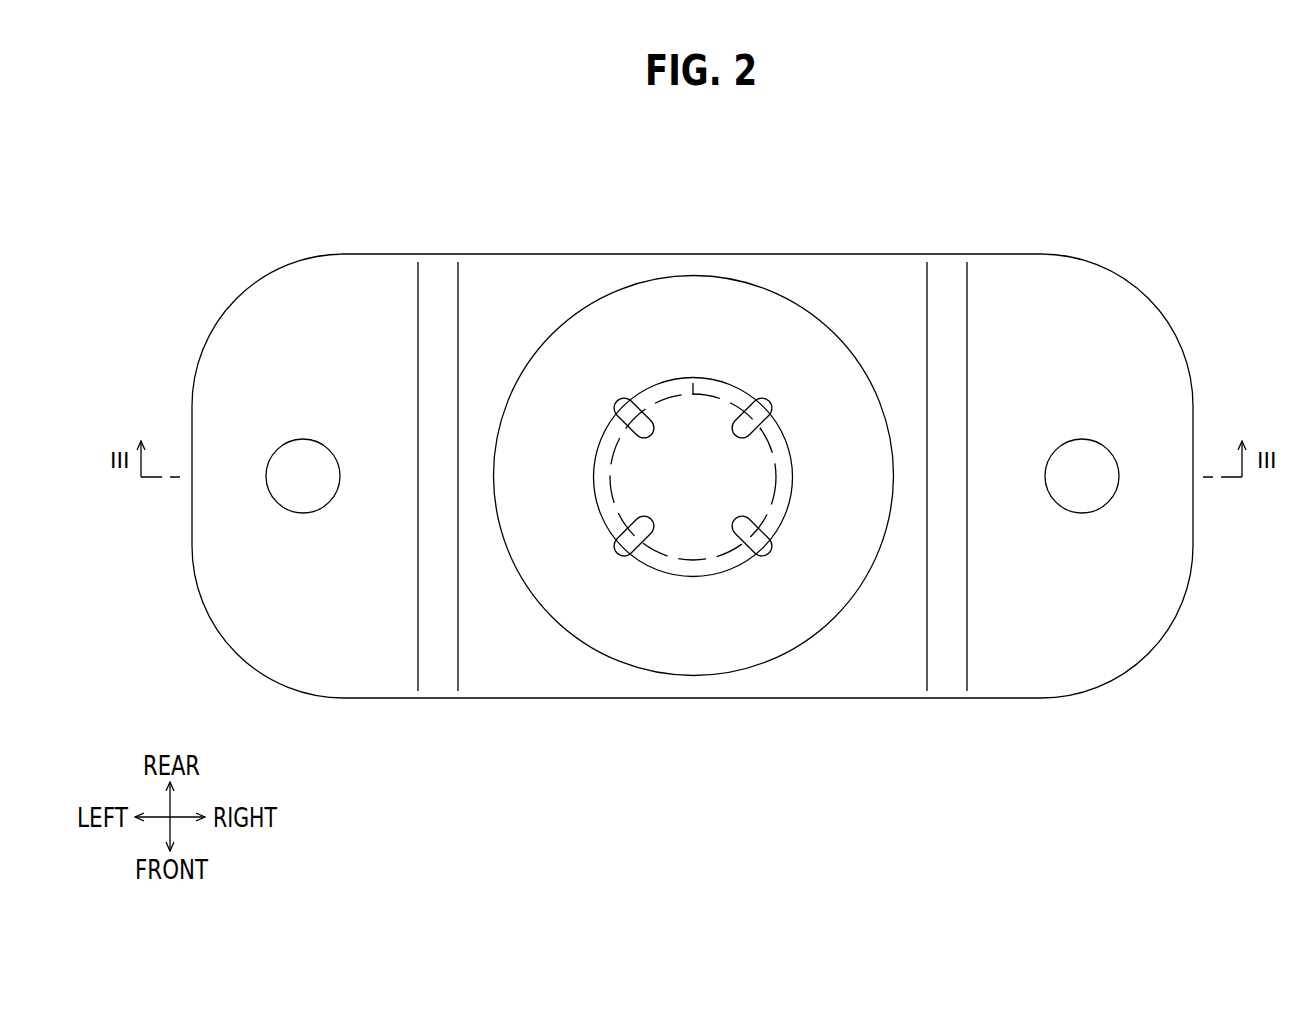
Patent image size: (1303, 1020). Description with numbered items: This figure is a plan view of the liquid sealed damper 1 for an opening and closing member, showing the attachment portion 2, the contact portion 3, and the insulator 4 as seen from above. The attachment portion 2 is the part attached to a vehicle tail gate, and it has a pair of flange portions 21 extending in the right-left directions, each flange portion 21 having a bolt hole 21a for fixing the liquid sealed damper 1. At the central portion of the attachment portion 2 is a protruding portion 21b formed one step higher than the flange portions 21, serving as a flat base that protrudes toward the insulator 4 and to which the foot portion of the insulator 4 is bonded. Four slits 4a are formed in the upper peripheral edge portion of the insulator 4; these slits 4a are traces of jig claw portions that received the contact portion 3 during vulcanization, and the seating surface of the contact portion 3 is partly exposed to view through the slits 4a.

The liquid sealed damper 1 is at (650, 213).
The attachment portion 2 is at (1135, 281).
The flange portion 21 is at (333, 285).
The bolt hole 21a is at (299, 512).
The protruding portion 21b is at (864, 666).
The contact portion 3 is at (697, 372).
The insulator 4 is at (760, 338).
The slit 4a is at (623, 407).